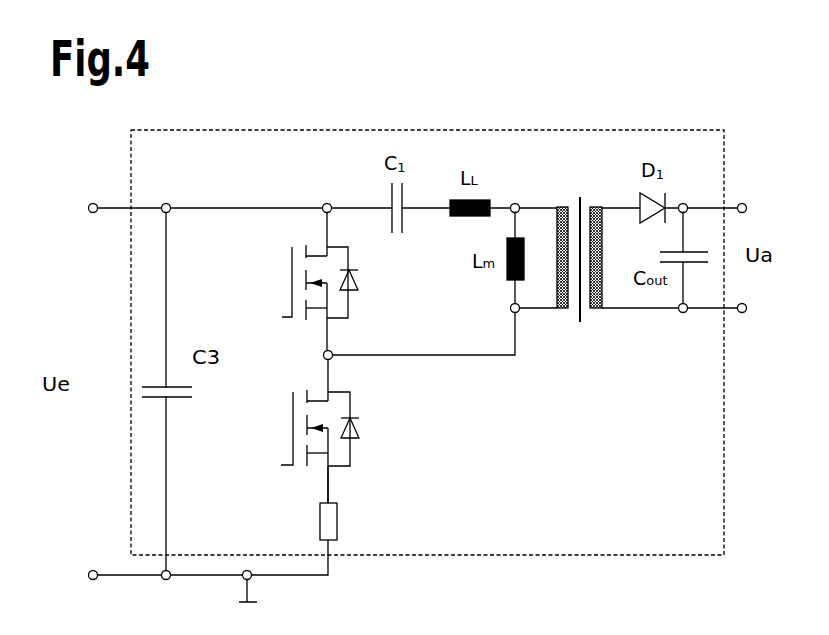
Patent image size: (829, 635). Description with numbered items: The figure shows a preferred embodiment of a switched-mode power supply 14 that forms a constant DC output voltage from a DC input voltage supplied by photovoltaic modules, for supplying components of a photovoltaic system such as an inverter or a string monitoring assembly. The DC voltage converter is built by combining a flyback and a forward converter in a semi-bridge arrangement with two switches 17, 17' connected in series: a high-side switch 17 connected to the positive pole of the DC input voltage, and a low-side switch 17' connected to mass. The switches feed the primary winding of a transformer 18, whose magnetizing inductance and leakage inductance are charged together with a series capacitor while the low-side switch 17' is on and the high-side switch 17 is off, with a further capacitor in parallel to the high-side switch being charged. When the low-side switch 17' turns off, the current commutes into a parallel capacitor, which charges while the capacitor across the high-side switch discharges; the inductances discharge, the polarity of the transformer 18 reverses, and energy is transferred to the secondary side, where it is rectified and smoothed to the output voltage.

The switched-mode power supply 14 is at (427, 342).
The high-side switch 17 is at (298, 281).
The low-side switch 17' is at (296, 429).
The transformer 18 is at (588, 152).